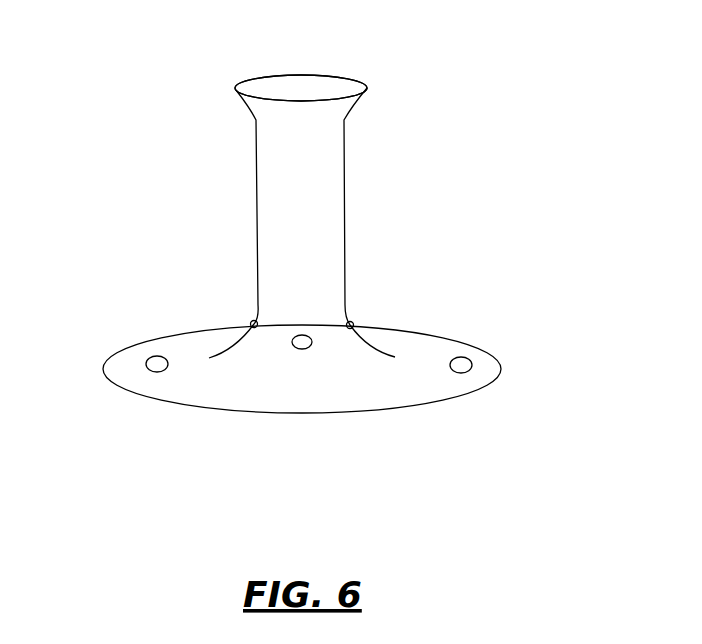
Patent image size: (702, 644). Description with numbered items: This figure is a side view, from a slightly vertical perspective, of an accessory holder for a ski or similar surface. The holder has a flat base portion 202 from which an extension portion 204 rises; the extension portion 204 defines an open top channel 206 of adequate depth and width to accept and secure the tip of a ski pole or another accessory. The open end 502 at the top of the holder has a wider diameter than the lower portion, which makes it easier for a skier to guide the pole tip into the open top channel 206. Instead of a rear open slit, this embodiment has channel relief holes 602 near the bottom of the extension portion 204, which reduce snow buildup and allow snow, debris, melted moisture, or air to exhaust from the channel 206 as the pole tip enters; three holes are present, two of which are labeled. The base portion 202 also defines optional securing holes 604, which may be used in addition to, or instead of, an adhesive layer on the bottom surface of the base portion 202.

The base portion 202 is at (302, 369).
The extension portion 204 is at (302, 223).
The open top channel 206 is at (332, 93).
The open end 502 is at (235, 88).
The channel relief holes 602 is at (251, 322).
The securing holes 604 is at (153, 360).